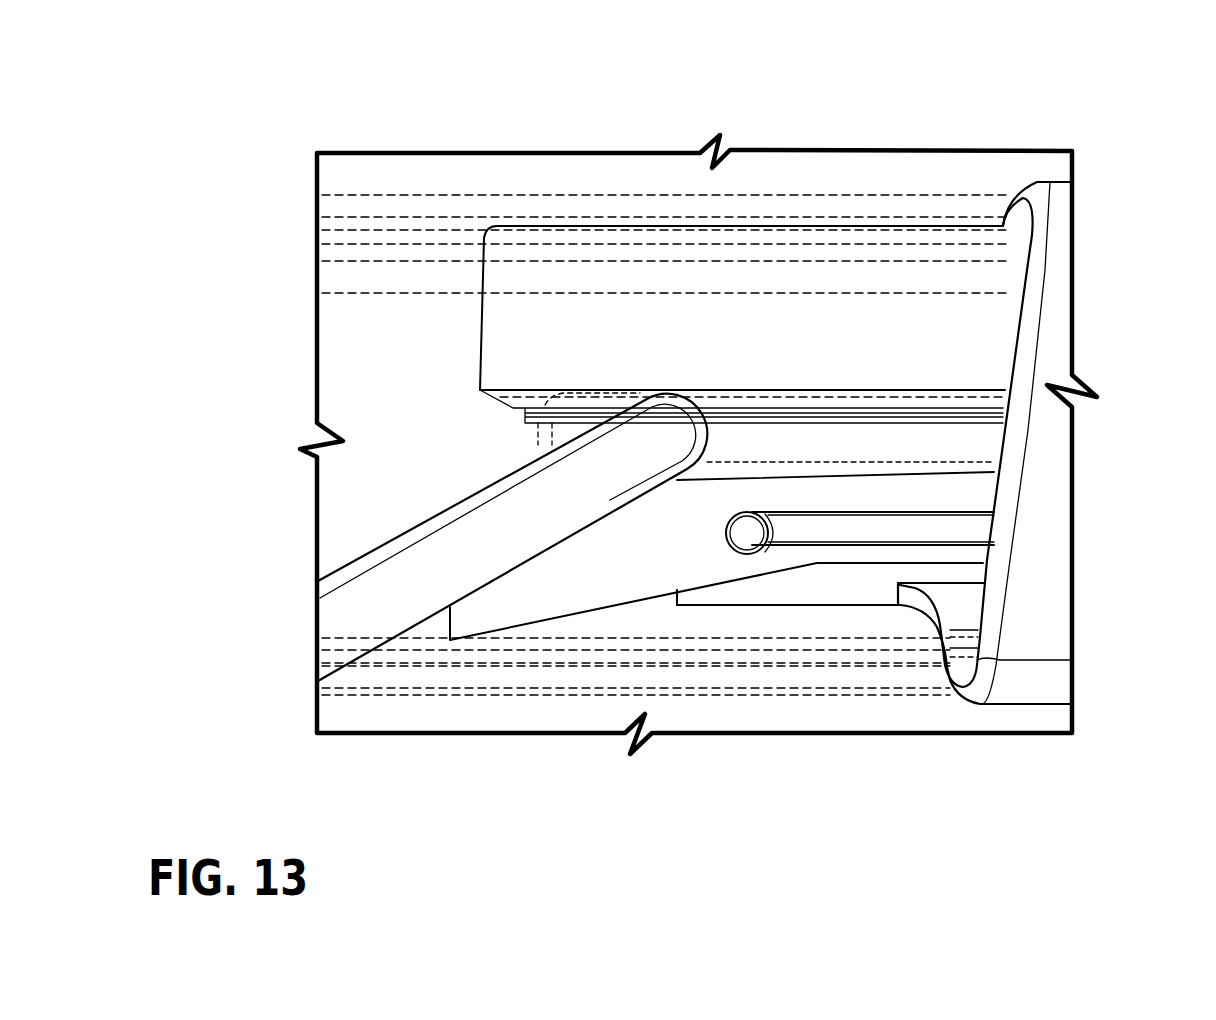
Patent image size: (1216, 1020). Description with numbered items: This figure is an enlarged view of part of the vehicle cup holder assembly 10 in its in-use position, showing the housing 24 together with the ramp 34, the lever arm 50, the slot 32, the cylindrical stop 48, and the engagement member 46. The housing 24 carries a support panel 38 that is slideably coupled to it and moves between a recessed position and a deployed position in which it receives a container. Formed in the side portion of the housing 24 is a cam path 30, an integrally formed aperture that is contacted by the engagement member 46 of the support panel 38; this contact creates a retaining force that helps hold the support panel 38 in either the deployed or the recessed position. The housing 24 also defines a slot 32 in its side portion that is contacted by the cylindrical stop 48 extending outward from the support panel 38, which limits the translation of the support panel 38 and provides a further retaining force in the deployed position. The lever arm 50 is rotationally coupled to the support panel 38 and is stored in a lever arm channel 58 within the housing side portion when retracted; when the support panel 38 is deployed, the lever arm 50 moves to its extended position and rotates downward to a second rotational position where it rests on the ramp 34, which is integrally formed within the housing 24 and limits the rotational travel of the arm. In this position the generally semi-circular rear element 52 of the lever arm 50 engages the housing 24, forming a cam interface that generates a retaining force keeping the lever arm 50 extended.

The vehicle cup holder assembly 10 is at (1126, 121).
The housing 24 is at (853, 315).
The cam path 30 is at (1012, 212).
The slot 32 is at (818, 548).
The ramp 34 is at (578, 575).
The support panel 38 is at (410, 253).
The engagement member 46 is at (763, 180).
The cylindrical stop 48 is at (745, 540).
The lever arm 50 is at (375, 553).
The rear element 52 is at (671, 398).
The lever arm channel 58 is at (975, 395).